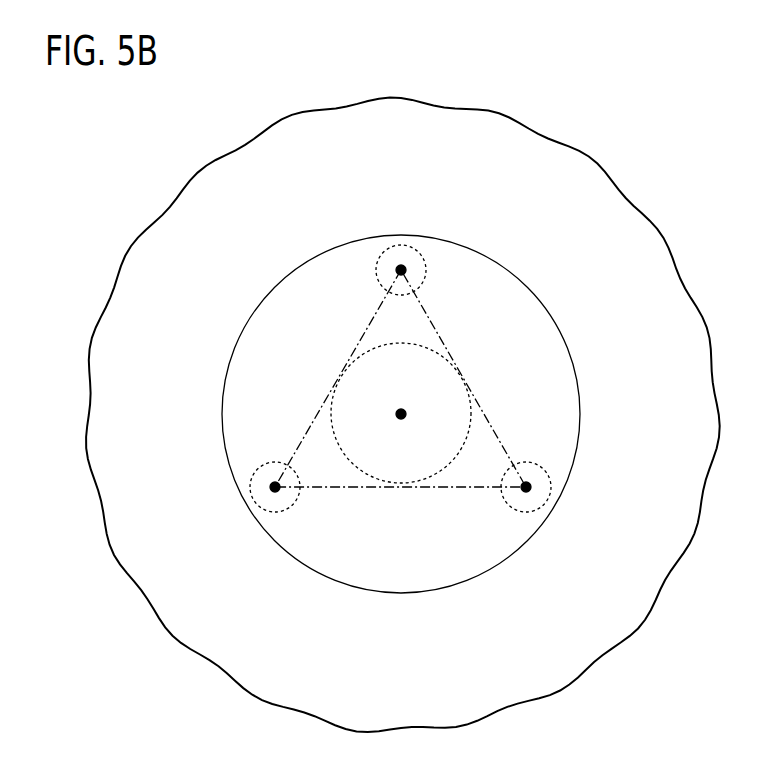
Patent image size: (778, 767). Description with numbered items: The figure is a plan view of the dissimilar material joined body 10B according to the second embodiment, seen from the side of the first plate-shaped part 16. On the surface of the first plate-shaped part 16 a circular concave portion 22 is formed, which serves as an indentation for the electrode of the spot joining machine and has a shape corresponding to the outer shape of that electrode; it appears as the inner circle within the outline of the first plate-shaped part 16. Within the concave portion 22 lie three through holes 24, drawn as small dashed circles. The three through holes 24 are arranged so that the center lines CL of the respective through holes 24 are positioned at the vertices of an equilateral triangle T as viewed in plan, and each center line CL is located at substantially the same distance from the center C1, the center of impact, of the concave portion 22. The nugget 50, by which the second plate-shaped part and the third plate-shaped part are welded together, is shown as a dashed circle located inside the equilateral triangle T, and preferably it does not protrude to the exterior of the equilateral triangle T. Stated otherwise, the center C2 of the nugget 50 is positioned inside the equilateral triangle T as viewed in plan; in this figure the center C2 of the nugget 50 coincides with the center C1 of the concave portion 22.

The dissimilar material joined body 10B is at (669, 82).
The first plate-shaped part 16 is at (522, 140).
The concave portion 22 is at (471, 259).
The through hole 24 is at (377, 262).
The nugget 50 is at (415, 344).
The equilateral triangle T is at (366, 331).
The center line CL is at (394, 272).
The center of the concave portion C1 is at (403, 428).
The center of the nugget C2 is at (401, 414).